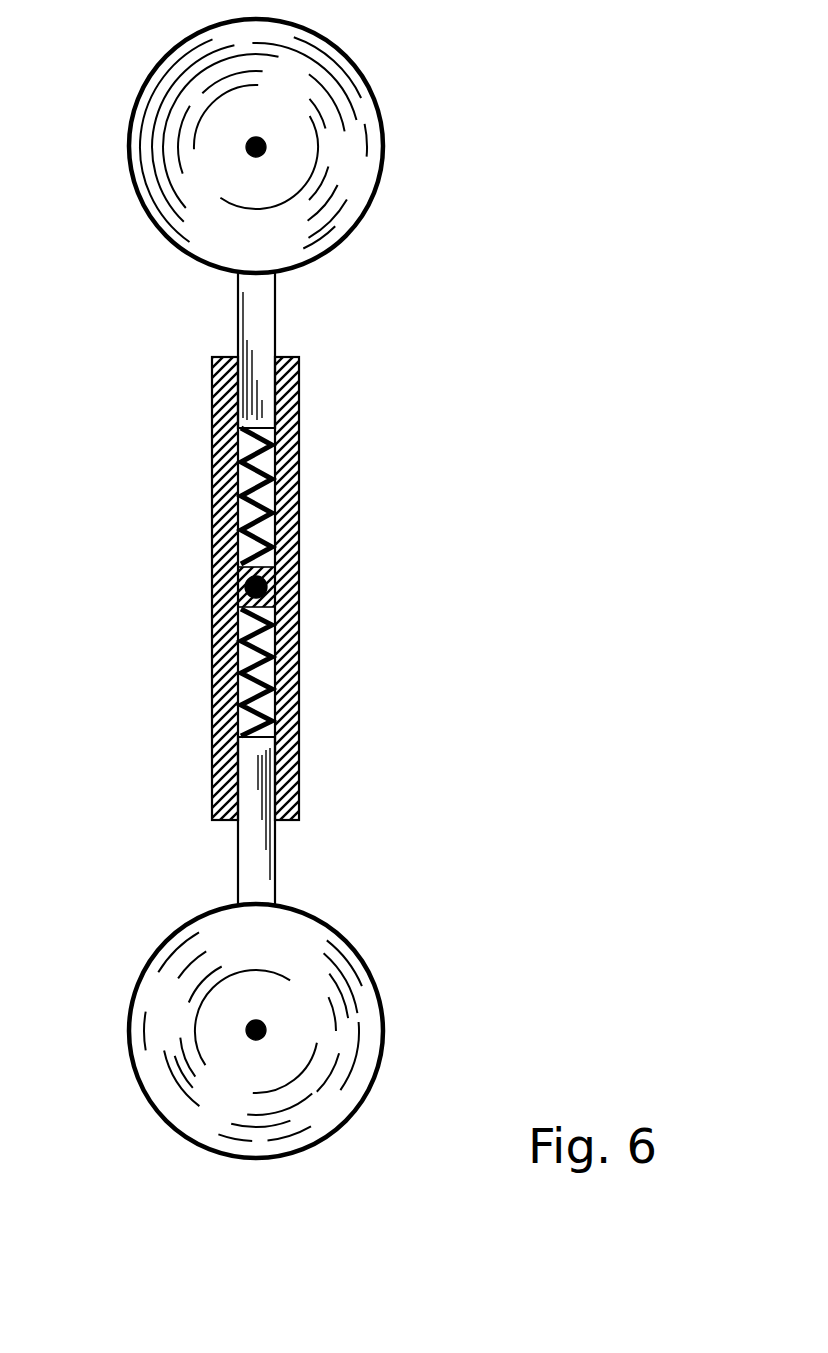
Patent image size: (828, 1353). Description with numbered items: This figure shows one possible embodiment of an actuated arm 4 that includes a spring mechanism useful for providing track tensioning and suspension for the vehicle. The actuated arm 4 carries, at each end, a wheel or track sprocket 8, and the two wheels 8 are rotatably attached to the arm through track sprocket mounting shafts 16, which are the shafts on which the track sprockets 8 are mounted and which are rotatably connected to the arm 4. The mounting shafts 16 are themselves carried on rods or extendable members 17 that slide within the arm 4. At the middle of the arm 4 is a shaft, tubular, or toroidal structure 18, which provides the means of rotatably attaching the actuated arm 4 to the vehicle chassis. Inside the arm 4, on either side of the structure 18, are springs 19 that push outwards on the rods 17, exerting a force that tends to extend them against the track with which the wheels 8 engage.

The actuated arm 4 is at (290, 645).
The wheels or track sprockets 8 is at (202, 243).
The track sprocket mounting shafts 16 is at (265, 146).
The rods or extendable members 17 is at (263, 298).
The shaft, tubular, or toroidal structure 18 is at (262, 585).
The springs 19 is at (270, 502).